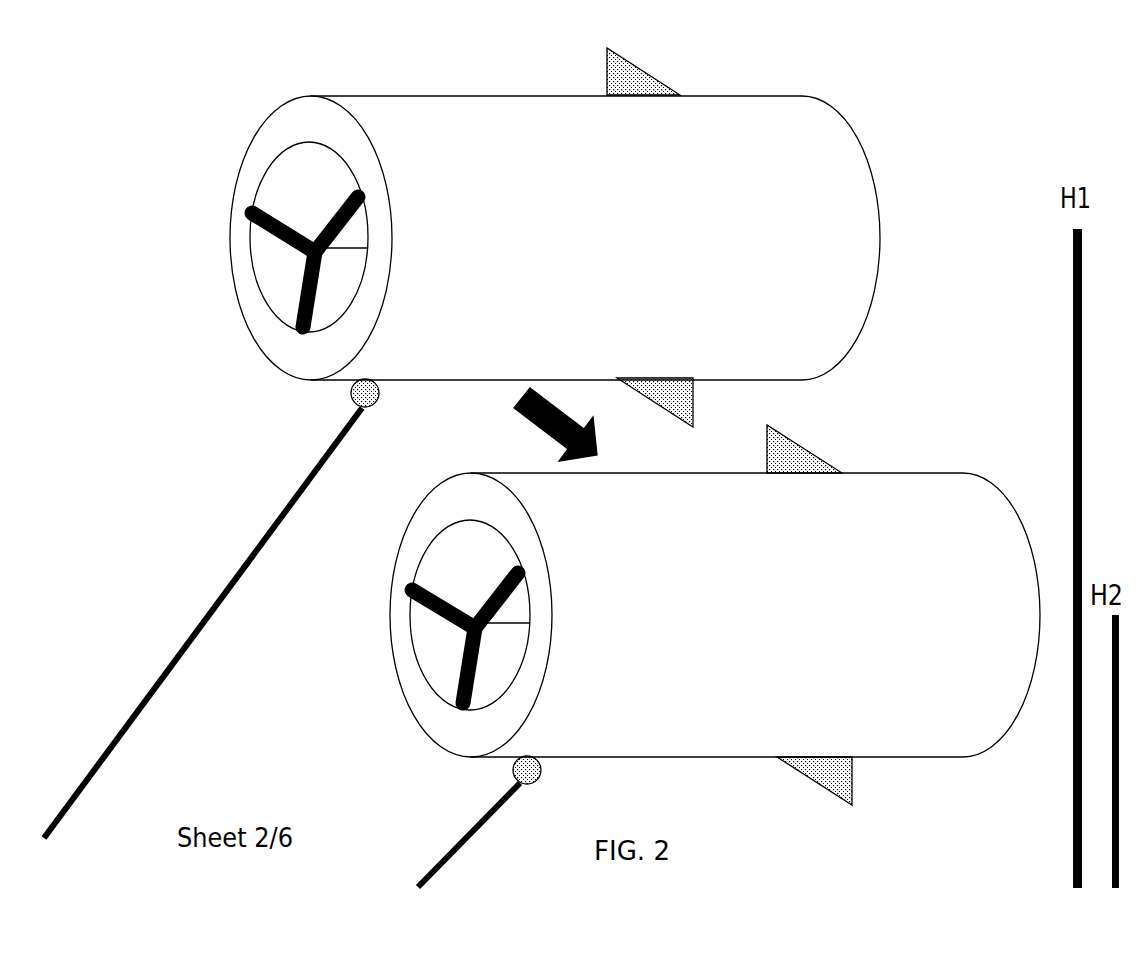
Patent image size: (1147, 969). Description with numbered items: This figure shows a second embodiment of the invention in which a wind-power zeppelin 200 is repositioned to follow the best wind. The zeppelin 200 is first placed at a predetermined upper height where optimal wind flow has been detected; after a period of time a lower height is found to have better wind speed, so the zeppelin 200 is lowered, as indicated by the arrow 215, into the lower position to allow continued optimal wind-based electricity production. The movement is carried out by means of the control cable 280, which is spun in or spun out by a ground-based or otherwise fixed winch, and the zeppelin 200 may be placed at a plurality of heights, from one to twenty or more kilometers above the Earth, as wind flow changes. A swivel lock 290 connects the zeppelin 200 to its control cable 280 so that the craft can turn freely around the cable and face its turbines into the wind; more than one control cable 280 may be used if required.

The zeppelin 200 is at (200, 152).
The swivel lock 290 is at (352, 396).
The control cable 280 is at (283, 500).
The lowering movement 215 is at (518, 417).